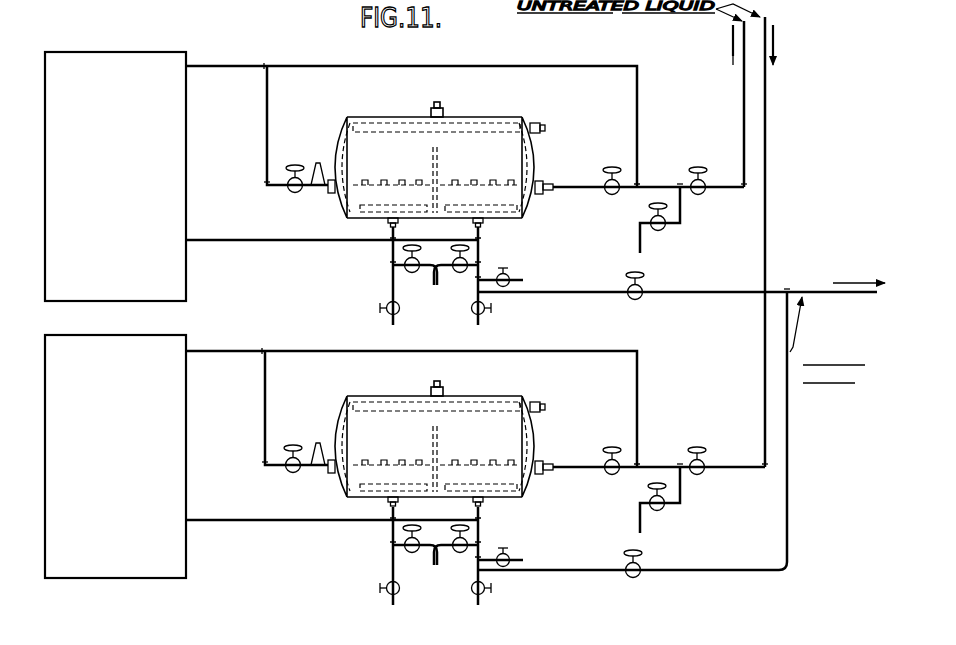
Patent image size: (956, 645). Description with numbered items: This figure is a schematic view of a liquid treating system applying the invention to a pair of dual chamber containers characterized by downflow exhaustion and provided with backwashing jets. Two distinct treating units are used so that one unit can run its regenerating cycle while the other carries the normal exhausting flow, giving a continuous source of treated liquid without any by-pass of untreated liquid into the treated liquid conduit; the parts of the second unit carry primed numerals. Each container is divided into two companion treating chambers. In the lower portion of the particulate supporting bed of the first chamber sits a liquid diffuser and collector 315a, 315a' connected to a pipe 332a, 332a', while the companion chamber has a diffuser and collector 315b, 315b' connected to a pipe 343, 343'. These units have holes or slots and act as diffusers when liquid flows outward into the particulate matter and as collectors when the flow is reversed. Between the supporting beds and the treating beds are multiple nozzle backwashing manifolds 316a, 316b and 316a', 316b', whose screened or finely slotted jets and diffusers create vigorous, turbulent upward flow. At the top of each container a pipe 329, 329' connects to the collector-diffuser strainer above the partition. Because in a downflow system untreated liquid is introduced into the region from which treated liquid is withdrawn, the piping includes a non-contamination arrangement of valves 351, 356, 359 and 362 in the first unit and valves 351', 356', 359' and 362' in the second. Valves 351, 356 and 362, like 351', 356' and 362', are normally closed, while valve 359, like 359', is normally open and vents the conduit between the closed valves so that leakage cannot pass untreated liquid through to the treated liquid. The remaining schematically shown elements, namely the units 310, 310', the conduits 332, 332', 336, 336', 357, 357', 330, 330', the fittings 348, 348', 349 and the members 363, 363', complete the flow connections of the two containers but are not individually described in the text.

The liquid source unit 310 is at (115, 176).
The second liquid source unit 310' is at (115, 456).
The inlet line 332 is at (413, 110).
The second inlet line 332' is at (413, 392).
The pipe 332a is at (383, 271).
The pipe 332a' is at (382, 551).
The return line 336 is at (332, 252).
The second return line 336' is at (332, 532).
The liquid diffuser and collector 315a is at (359, 201).
The diffuser and collector 315b is at (514, 202).
The liquid diffuser and collector 315a' is at (360, 481).
The diffuser and collector 315b' is at (521, 482).
The multiple nozzle backwashing manifold 316a is at (391, 164).
The multiple nozzle backwashing manifold 316b is at (480, 164).
The multiple nozzle backwashing manifold 316a' is at (391, 444).
The multiple nozzle backwashing manifold 316b' is at (480, 444).
The pipe 329 is at (554, 115).
The pipe 329' is at (558, 394).
The pipe 343 is at (488, 271).
The pipe 343' is at (490, 551).
The treated liquid outlet valve 348 is at (677, 297).
The second treated liquid outlet valve 348' is at (628, 574).
The treated liquid discharge 349 is at (806, 296).
The valve 351 is at (716, 194).
The valve 351' is at (723, 472).
The valve 356 is at (619, 195).
The valve 356' is at (587, 468).
The tank inlet pipe 357 is at (648, 167).
The second tank inlet pipe 357' is at (660, 447).
The valve 359 is at (670, 221).
The valve 359' is at (681, 498).
The valve 362 is at (279, 138).
The valve 362' is at (278, 421).
The funnel 363 is at (314, 163).
The second funnel 363' is at (310, 443).
The untreated liquid supply line 330 is at (719, 104).
The second untreated liquid supply line 330' is at (795, 242).